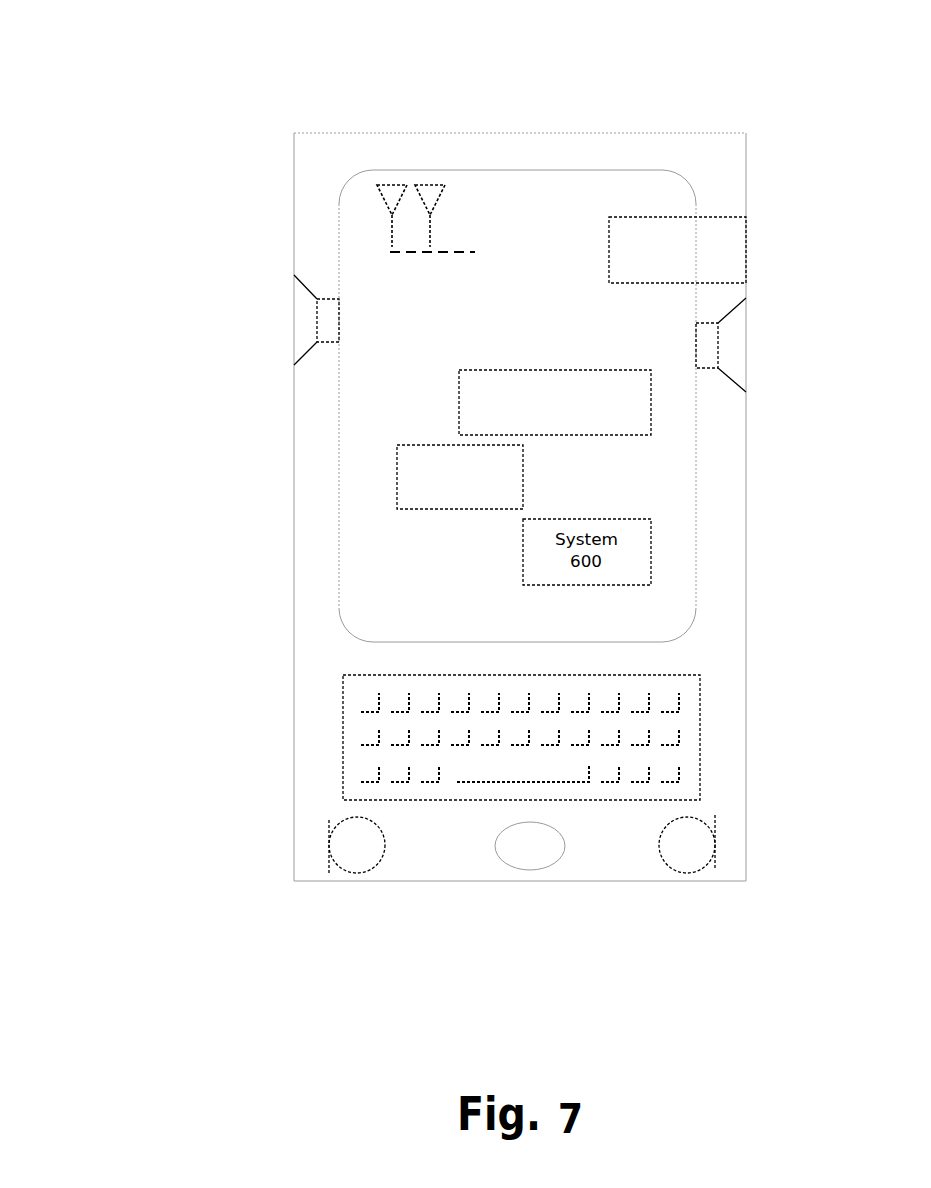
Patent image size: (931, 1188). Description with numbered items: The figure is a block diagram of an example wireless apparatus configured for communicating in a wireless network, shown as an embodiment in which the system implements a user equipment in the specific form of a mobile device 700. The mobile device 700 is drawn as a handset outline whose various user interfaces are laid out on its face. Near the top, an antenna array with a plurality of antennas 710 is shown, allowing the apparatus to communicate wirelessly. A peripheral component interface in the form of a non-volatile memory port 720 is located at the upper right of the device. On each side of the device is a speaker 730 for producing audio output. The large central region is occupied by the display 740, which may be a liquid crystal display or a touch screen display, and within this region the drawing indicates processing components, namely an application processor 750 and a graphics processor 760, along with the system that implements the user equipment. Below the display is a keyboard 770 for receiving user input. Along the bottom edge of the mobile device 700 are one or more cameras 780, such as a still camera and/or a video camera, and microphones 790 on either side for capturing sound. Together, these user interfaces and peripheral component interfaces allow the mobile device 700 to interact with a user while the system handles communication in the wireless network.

The mobile device 700 is at (216, 84).
The antennas 710 is at (430, 185).
The non-volatile memory port 720 is at (746, 230).
The speaker 730 is at (294, 328).
The display 740 is at (696, 567).
The other application processor 750 is at (587, 435).
The graphics processor 760 is at (435, 509).
The keyboard 770 is at (665, 675).
The camera 780 is at (503, 862).
The microphone 790 is at (350, 873).